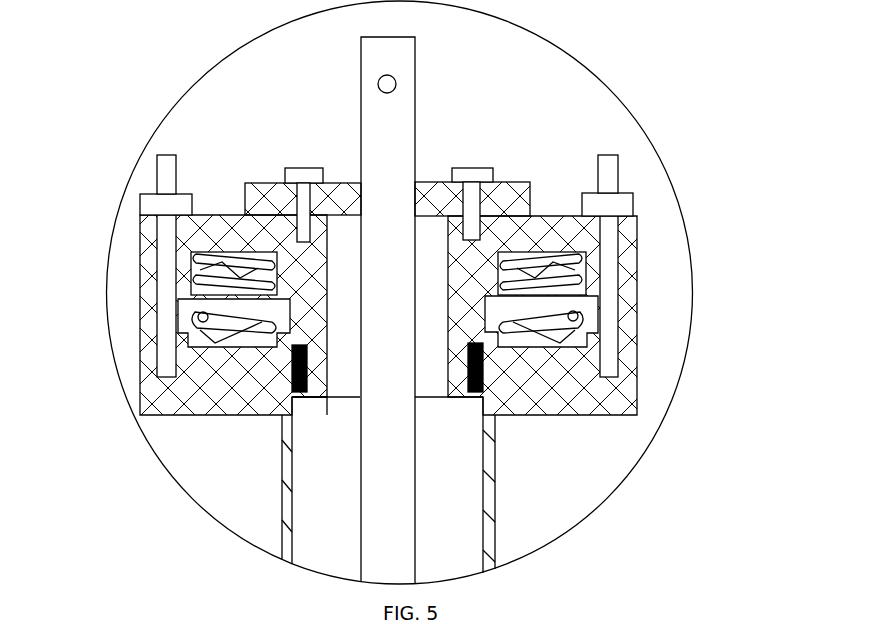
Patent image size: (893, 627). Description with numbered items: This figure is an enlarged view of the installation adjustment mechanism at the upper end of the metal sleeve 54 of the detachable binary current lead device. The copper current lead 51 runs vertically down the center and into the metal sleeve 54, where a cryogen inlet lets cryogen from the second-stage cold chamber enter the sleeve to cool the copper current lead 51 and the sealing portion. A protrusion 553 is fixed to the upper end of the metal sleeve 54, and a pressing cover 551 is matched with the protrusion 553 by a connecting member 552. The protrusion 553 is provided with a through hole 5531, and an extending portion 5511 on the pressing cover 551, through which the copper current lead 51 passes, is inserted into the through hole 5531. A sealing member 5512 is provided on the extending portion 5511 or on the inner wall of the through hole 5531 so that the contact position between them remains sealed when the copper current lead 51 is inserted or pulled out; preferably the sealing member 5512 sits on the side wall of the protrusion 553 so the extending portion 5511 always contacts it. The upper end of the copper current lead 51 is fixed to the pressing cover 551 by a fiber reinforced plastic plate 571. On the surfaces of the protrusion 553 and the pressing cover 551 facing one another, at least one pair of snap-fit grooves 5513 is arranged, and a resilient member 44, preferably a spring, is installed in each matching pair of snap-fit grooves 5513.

The copper current lead 51 is at (409, 535).
The metal sleeve 54 is at (489, 473).
The resilient member 44 is at (566, 319).
The pressing cover 551 is at (630, 224).
The connecting member 552 is at (620, 181).
The protrusion 553 is at (640, 405).
The fiber reinforced plastic plate 571 is at (507, 187).
The extending portion 5511 is at (302, 321).
The sealing member 5512 is at (485, 358).
The snap-fit groove 5513 is at (582, 265).
The through hole 5531 is at (313, 412).